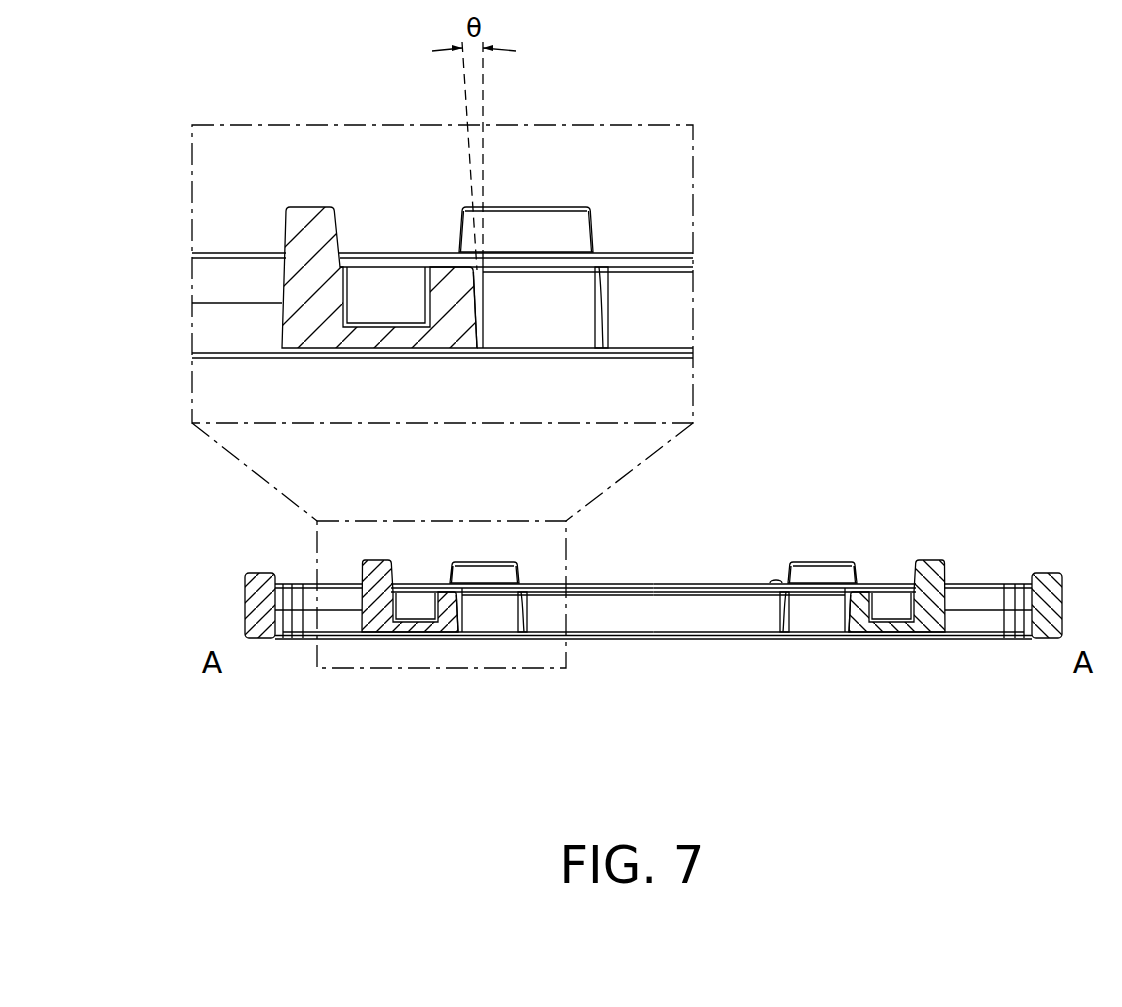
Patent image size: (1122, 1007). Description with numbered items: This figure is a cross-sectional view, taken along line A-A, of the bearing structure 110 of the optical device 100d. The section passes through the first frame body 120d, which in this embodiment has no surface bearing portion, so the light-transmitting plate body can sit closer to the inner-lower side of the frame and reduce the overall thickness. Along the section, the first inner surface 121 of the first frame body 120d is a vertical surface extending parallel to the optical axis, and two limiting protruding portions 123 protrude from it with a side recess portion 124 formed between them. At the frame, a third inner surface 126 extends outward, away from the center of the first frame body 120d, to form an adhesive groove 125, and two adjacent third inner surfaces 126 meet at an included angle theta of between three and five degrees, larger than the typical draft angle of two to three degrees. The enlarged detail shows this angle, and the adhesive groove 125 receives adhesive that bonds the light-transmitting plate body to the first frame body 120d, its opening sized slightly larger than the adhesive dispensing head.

The optical device 100d is at (1005, 430).
The bearing structure 110 is at (258, 580).
The first frame body 120d is at (305, 220).
The first inner surface 121 is at (473, 725).
The limiting protruding portion 123 is at (500, 620).
The side recess portion 124 is at (658, 618).
The adhesive groove 125 is at (478, 264).
The third inner surface 126 is at (476, 301).